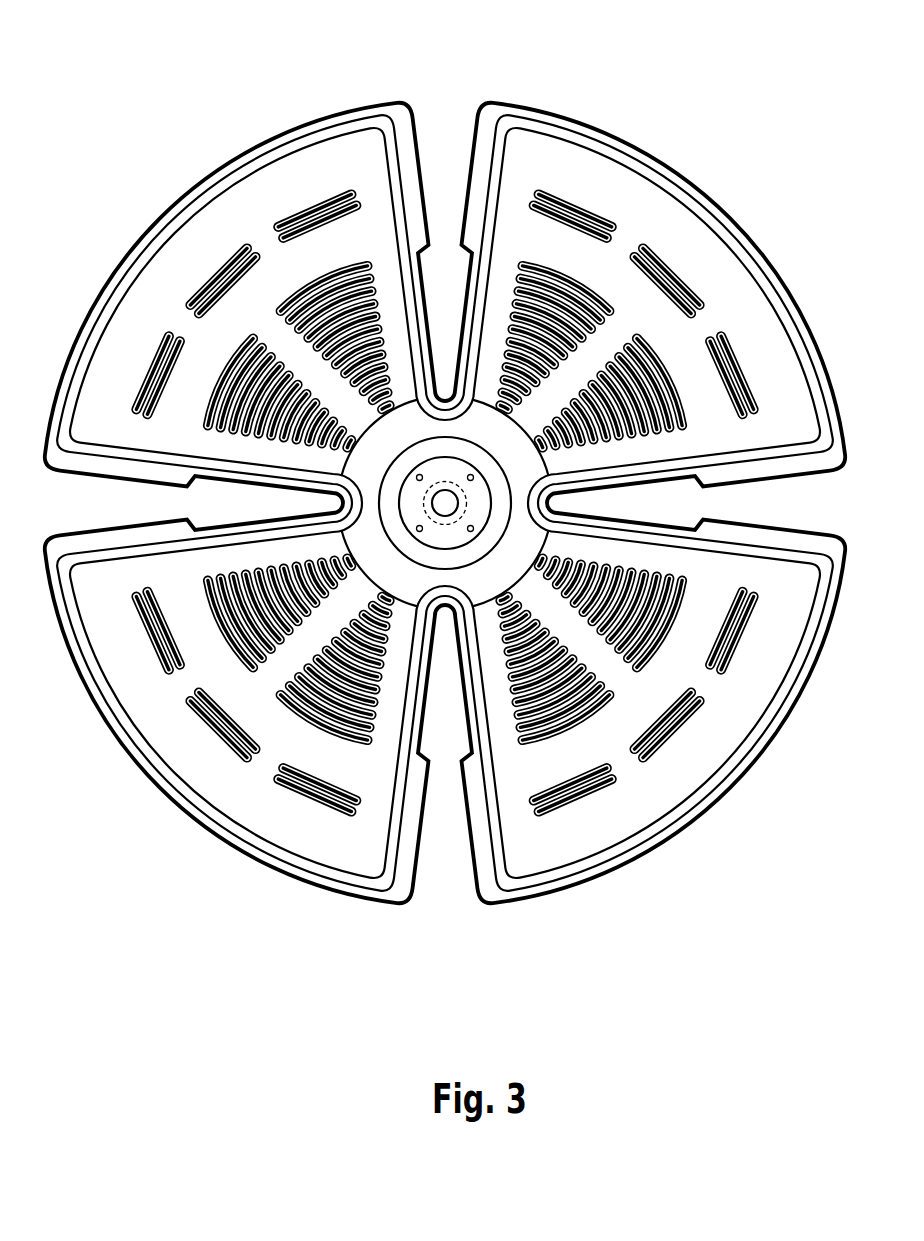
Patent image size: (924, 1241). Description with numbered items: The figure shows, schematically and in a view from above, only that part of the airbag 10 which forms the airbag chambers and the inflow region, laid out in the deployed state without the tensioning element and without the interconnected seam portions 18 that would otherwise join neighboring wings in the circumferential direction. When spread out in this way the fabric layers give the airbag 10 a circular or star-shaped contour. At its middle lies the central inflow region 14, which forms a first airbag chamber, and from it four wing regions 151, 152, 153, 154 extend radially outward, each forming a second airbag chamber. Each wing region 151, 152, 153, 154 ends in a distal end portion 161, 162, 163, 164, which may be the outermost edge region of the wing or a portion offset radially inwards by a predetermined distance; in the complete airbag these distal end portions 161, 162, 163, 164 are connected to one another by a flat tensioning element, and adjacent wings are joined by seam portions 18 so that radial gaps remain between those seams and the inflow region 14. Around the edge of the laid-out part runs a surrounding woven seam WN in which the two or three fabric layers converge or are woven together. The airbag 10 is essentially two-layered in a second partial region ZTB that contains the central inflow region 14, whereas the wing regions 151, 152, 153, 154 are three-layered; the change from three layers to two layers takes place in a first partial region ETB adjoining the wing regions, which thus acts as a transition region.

The airbag 10 is at (756, 1000).
The central inflow region 14 is at (444, 503).
The seam portions 18 is at (482, 172).
The first wing region 151 is at (192, 562).
The second wing region 152 is at (447, 700).
The third wing region 153 is at (652, 445).
The fourth wing region 154 is at (392, 256).
The distal end portion of first wing region 161 is at (188, 802).
The distal end portion of second wing region 162 is at (712, 790).
The distal end portion of third wing region 163 is at (712, 213).
The distal end portion of fourth wing region 164 is at (193, 197).
The woven seam WN is at (270, 135).
The first partial region ETB is at (367, 452).
The second partial region ZTB is at (500, 518).